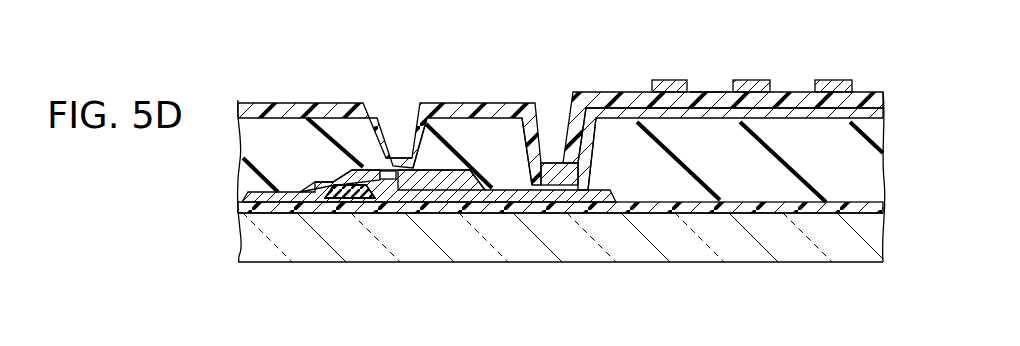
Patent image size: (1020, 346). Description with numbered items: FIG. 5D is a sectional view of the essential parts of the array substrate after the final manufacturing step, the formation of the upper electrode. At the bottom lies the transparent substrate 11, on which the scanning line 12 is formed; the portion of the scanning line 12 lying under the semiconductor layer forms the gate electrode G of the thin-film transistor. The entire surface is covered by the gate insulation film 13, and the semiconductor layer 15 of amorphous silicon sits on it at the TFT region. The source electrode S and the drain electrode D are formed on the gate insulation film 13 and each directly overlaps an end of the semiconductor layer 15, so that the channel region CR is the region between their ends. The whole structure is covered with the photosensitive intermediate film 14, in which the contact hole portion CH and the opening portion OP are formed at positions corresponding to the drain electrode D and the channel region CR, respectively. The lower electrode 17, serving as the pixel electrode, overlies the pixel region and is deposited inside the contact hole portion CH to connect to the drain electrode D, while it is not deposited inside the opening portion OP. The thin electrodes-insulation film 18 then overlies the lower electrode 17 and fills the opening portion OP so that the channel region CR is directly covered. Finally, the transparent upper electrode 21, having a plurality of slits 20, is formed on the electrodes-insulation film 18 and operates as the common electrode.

The transparent substrate 11 is at (587, 240).
The gate insulation film 13 is at (697, 207).
The semiconductor layer 15 is at (348, 197).
The scanning line 12 is at (420, 192).
The gate electrode G is at (350, 191).
The source electrode S is at (284, 196).
The drain electrode D is at (494, 192).
The channel region CR is at (374, 166).
The intermediate film 14 is at (245, 149).
The lower electrode 17 is at (597, 130).
The electrodes-insulation film 18 is at (302, 102).
The opening portion OP is at (402, 163).
The contact hole portion CH is at (549, 162).
The upper electrode 21 is at (840, 80).
The slit 20 is at (712, 86).